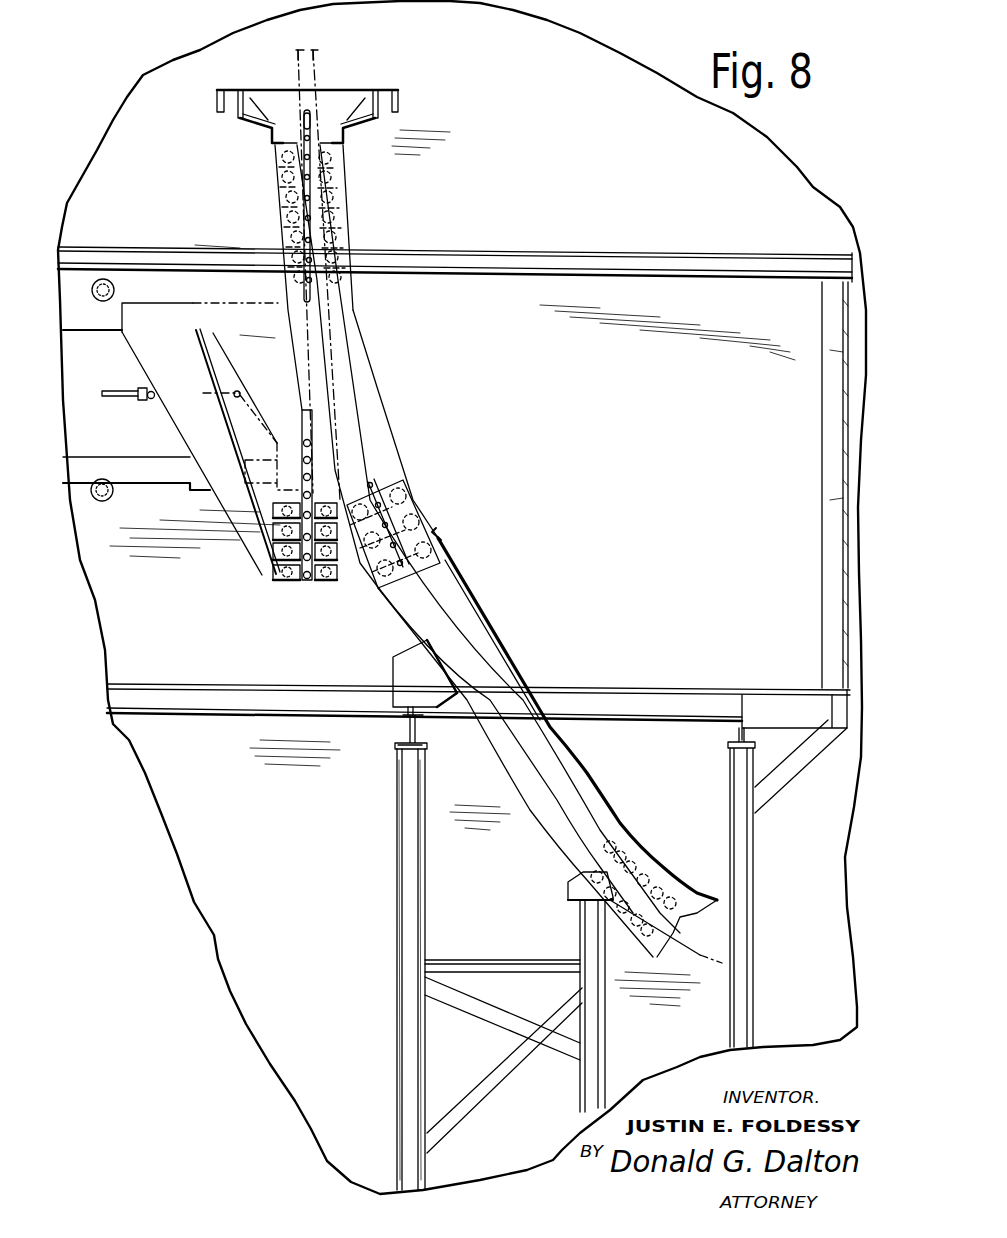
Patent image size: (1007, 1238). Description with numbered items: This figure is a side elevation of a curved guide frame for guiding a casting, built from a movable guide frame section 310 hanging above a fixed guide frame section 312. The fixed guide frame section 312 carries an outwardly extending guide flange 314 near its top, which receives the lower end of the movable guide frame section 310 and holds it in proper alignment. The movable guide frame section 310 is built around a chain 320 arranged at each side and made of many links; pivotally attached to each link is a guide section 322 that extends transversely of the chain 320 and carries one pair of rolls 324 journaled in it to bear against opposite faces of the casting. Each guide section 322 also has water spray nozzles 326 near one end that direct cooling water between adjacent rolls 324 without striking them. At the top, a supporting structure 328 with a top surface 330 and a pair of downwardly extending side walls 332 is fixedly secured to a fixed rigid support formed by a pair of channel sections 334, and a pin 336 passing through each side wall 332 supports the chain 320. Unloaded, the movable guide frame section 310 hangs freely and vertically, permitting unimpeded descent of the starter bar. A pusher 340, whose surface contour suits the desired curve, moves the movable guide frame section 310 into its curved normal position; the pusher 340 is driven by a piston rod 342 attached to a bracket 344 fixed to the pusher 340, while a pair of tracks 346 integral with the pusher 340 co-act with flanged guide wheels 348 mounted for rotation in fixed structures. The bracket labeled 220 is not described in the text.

The mounting bracket 220 is at (402, 98).
The movable guide frame section 310 is at (380, 385).
The fixed guide frame section 312 is at (475, 622).
The guide flange 314 is at (442, 538).
The chain 320 is at (310, 582).
The guide section 322 is at (270, 582).
The rolls 324 is at (328, 582).
The water spray nozzles 326 is at (257, 563).
The supporting structure 328 is at (357, 105).
The top surface 330 is at (368, 62).
The side walls 332 is at (268, 120).
The channel sections 334 is at (217, 98).
The pin 336 is at (302, 107).
The pusher 340 is at (190, 408).
The piston rod 342 is at (122, 388).
The bracket 344 is at (158, 402).
The tracks 346 is at (170, 470).
The flanged guide wheels 348 is at (103, 501).